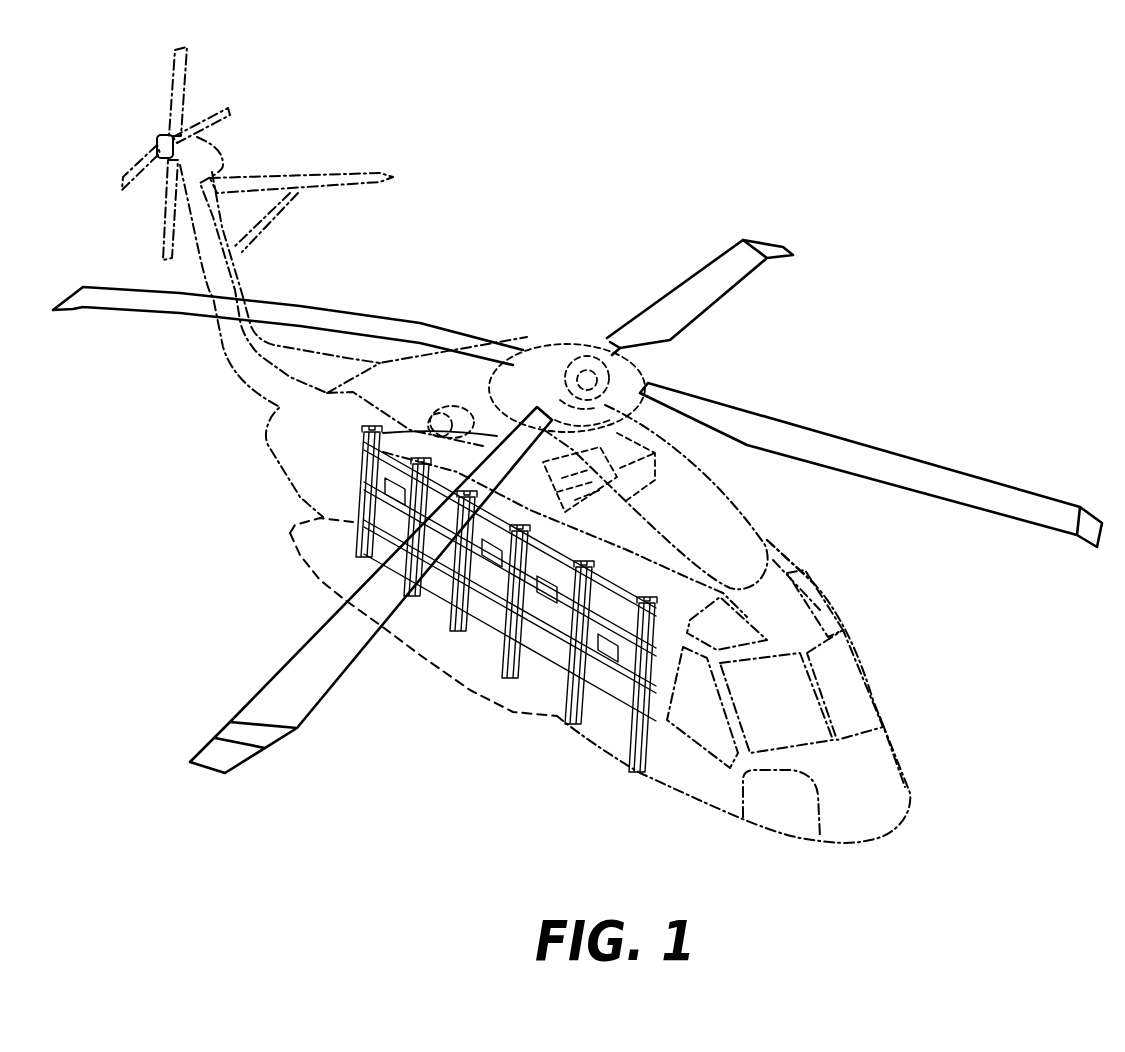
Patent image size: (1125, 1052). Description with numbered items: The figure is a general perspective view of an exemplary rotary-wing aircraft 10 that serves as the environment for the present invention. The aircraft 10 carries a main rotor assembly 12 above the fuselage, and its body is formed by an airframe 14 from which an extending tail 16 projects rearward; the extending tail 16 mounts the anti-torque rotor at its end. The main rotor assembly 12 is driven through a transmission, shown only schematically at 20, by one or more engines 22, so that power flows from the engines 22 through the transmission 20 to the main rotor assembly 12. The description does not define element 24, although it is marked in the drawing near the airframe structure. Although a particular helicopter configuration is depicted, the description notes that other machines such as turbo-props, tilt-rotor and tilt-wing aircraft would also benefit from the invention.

The rotary-wing aircraft 10 is at (813, 347).
The main rotor assembly 12 is at (587, 348).
The airframe 14 is at (537, 673).
The extending tail 16 is at (233, 350).
The transmission 20 is at (640, 483).
The engines 22 is at (383, 433).
The longitudinal beams 24 is at (617, 690).